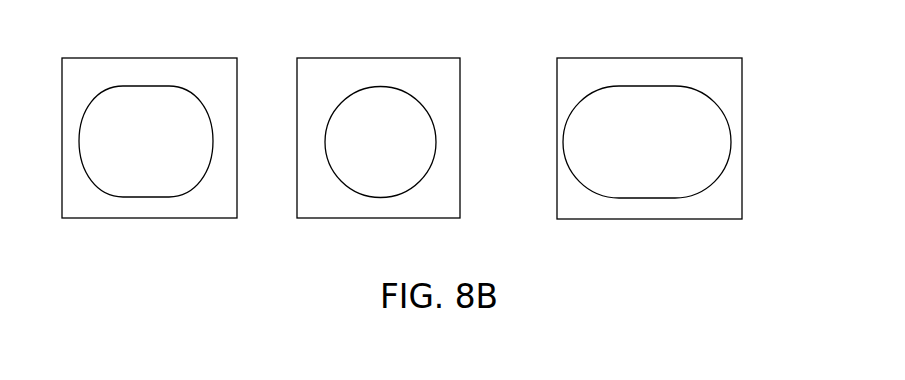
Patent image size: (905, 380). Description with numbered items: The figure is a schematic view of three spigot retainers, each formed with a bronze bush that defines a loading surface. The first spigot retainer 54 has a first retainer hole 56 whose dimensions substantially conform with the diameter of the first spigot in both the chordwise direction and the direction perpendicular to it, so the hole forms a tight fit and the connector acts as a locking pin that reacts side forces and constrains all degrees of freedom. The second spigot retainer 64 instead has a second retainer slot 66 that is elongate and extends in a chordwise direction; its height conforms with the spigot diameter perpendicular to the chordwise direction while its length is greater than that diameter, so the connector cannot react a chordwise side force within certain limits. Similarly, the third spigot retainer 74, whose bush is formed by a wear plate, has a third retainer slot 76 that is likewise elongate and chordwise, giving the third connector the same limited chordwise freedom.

The first spigot retainer 54 is at (308, 200).
The first retainer hole 56 is at (382, 112).
The second spigot retainer 64 is at (73, 200).
The second retainer slot 66 is at (157, 102).
The third spigot retainer 74 is at (722, 202).
The third retainer slot 76 is at (646, 112).